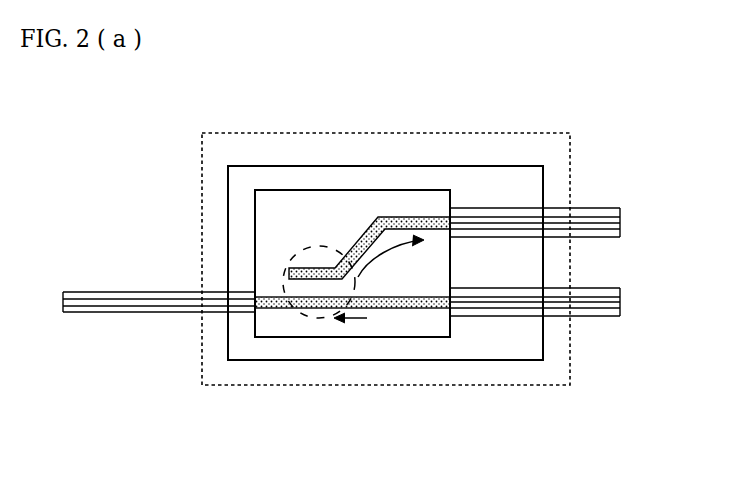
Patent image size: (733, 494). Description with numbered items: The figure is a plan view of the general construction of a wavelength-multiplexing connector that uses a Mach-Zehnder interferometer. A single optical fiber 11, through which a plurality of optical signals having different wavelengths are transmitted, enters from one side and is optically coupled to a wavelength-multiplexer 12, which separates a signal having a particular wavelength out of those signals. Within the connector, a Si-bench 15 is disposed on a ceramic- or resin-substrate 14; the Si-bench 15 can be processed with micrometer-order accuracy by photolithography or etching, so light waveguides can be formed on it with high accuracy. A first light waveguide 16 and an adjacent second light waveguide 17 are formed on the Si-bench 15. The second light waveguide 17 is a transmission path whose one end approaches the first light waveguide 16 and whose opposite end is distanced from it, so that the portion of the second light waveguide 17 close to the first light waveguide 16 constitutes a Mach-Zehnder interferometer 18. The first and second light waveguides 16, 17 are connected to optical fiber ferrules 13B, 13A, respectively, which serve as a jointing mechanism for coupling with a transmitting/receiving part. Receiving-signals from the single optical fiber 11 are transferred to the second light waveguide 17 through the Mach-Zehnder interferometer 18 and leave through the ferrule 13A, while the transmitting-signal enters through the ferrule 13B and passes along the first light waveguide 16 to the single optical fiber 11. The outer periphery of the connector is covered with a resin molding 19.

The single optical fiber 11 is at (123, 290).
The wavelength-multiplexer 12 is at (332, 190).
The optical fiber ferrule 13A is at (603, 207).
The optical fiber ferrule 13B is at (597, 318).
The substrate 14 is at (470, 167).
The Si-bench 15 is at (420, 308).
The first light waveguide 16 is at (273, 308).
The second light waveguide 17 is at (403, 217).
The Mach-Zehnder interferometer 18 is at (301, 250).
The resin molding 19 is at (560, 388).